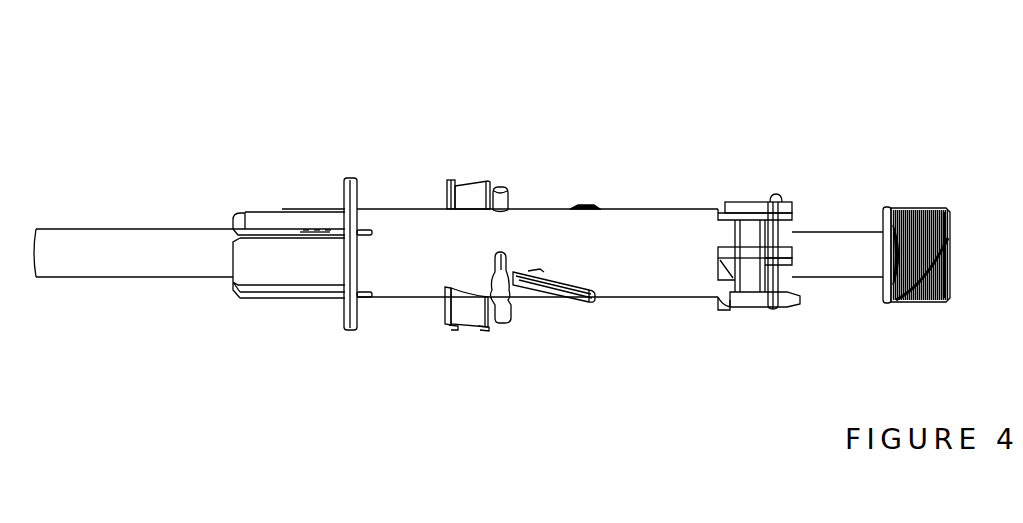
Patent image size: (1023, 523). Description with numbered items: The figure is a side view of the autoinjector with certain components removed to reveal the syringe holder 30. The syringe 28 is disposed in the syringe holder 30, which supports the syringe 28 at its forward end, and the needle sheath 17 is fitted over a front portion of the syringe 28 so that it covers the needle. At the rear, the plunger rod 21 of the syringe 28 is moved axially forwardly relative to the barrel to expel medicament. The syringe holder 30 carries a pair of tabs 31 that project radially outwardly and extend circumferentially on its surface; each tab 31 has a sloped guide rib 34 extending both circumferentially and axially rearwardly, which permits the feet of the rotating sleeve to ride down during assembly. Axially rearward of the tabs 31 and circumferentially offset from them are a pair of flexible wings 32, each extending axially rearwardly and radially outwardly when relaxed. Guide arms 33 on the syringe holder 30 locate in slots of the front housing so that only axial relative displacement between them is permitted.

The needle sheath 17 is at (120, 258).
The plunger rod 21 is at (920, 225).
The syringe 28 is at (748, 237).
The syringe holder 30 is at (655, 208).
The tabs 31 is at (447, 194).
The flexible wings 32 is at (586, 205).
The guide arms 33 is at (504, 252).
The guide rib sloped section 34 is at (477, 182).